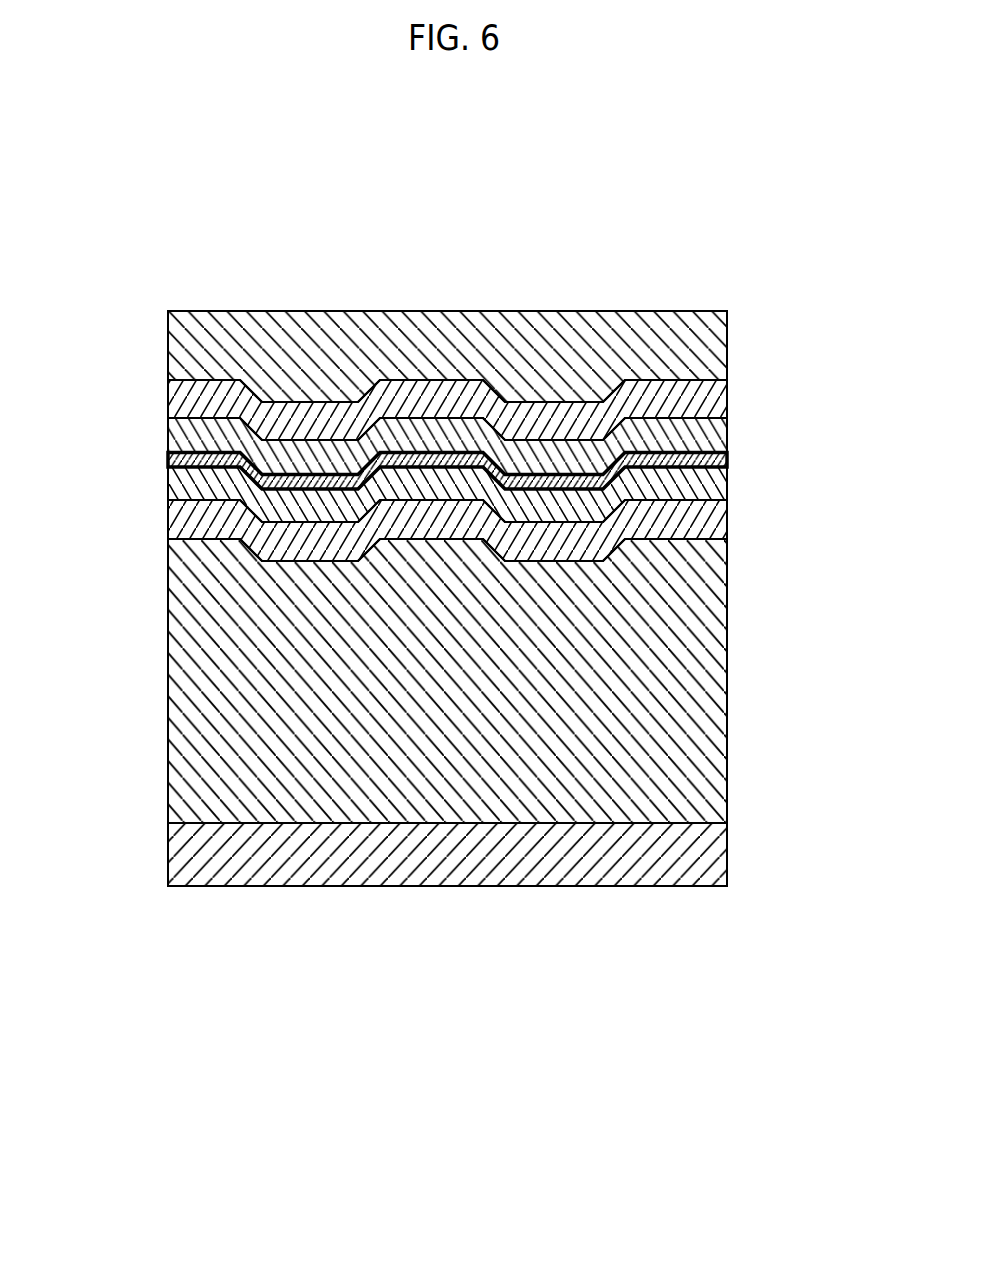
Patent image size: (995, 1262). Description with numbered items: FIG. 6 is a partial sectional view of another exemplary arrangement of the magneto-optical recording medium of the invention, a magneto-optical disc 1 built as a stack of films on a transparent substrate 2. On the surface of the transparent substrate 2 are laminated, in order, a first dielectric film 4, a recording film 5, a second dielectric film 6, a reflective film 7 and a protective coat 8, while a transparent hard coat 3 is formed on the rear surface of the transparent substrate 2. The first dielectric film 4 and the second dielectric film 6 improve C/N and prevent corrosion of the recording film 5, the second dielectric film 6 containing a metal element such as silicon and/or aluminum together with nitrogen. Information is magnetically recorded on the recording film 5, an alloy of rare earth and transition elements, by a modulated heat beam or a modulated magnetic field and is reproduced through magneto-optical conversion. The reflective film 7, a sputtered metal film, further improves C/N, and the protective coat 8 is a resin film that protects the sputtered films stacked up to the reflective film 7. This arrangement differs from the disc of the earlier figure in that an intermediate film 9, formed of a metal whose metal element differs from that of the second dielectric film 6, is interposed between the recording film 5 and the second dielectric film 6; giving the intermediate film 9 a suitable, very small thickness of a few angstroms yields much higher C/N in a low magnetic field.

The magneto-optical disc 1 is at (436, 962).
The transparent substrate 2 is at (708, 688).
The transparent hard coat 3 is at (708, 862).
The first dielectric film 4 is at (708, 535).
The recording film 5 is at (708, 490).
The second dielectric film 6 is at (708, 440).
The reflective film 7 is at (177, 393).
The protective coat 8 is at (708, 352).
The intermediate film 9 is at (176, 458).